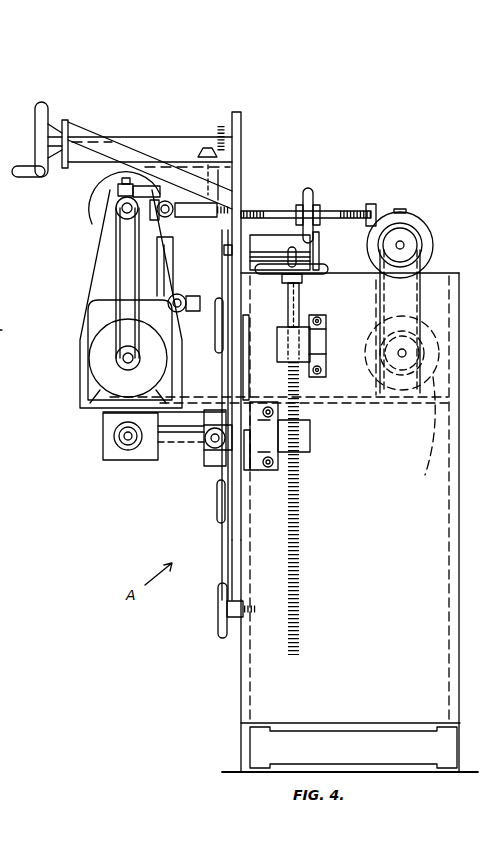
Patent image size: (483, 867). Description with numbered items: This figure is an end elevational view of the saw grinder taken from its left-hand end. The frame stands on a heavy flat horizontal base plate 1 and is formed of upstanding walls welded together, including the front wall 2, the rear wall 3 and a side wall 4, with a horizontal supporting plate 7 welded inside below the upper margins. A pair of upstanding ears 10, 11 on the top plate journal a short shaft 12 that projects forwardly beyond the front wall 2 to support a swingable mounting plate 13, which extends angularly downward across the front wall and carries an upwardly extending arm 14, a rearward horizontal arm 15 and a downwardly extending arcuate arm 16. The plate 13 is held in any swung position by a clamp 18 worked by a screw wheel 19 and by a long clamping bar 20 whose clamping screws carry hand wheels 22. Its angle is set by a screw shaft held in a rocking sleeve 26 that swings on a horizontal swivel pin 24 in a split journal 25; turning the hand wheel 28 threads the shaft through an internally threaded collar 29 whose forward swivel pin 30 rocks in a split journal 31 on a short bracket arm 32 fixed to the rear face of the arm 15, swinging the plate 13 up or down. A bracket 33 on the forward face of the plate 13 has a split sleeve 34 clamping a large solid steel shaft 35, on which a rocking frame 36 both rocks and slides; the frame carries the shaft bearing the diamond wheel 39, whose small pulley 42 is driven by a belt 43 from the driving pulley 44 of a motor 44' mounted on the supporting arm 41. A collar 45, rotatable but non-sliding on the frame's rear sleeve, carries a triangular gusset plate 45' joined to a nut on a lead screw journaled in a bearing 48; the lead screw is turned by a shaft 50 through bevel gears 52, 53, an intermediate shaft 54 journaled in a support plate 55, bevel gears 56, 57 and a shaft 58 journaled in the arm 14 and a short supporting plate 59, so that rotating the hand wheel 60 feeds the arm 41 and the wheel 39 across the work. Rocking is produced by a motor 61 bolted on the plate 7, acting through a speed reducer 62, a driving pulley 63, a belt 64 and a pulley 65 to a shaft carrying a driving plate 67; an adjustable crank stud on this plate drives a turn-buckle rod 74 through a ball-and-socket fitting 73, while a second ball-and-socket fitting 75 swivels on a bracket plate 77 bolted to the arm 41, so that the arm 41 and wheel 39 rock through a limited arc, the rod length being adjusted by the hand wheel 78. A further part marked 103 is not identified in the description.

The base plate 1 is at (244, 735).
The front wall 2 is at (241, 675).
The rear wall 3 is at (462, 655).
The side wall 4 is at (373, 684).
The horizontal supporting plate 7 is at (429, 426).
The upstanding ear 10 is at (252, 250).
The upstanding ear 11 is at (318, 244).
The short shaft 12 is at (319, 256).
The swingable mounting plate 13 is at (243, 303).
The vertically upwardly extending arm 14 is at (241, 160).
The horizontal arm 15 is at (242, 384).
The arcuate arm 16 is at (233, 565).
The clamp 18 is at (218, 603).
The screw wheel 19 is at (218, 628).
The long clamping bar 20 is at (230, 355).
The hand wheel 22 is at (216, 322).
The horizontal swivel pin 24 is at (327, 338).
The split journal 25 is at (327, 326).
The rocking sleeve 26 is at (280, 328).
The hand wheel 28 is at (326, 275).
The internally threaded collar 29 is at (310, 432).
The swivel pin 30 is at (258, 463).
The split journal 31 is at (244, 406).
The short bracket arm 32 is at (252, 470).
The bracket 33 is at (205, 444).
The split sleeve 34 is at (103, 425).
The solid steel shaft 35 is at (118, 462).
The rocking frame 36 is at (88, 296).
The diamond wheel 39 is at (92, 200).
The supporting arm 41 is at (110, 265).
The small pulley 42 is at (116, 218).
The driving belt 43 is at (126, 265).
The driving pulley 44 is at (89, 366).
The driving motor 44' is at (101, 358).
The collar 45 is at (115, 470).
The triangular gusset plate 45' is at (101, 409).
The bearing 48 is at (242, 468).
The axially extending shaft 50 is at (131, 461).
The bevel gear 52 is at (216, 460).
The bevel gear 53 is at (200, 402).
The intermediate shaft 54 is at (216, 278).
The support plate 55 is at (80, 168).
The bevel gear 56 is at (206, 147).
The bevel gear 57 is at (221, 126).
The shaft 58 is at (135, 137).
The short supporting plate 59 is at (68, 122).
The hand wheel 60 is at (46, 102).
The motor 61 is at (434, 388).
The speed reducer 62 is at (412, 307).
The driving pulley 63 is at (386, 392).
The belt 64 is at (425, 262).
The pulley 65 is at (418, 236).
The driving plate 67 is at (408, 214).
The ball-and-socket fitting 73 is at (372, 206).
The turn-buckle rod 74 is at (270, 211).
The ball-and-socket fitting 75 is at (186, 220).
The bracket plate 77 is at (115, 210).
The hand wheel 78 is at (309, 200).
The work table 103 is at (8, 322).